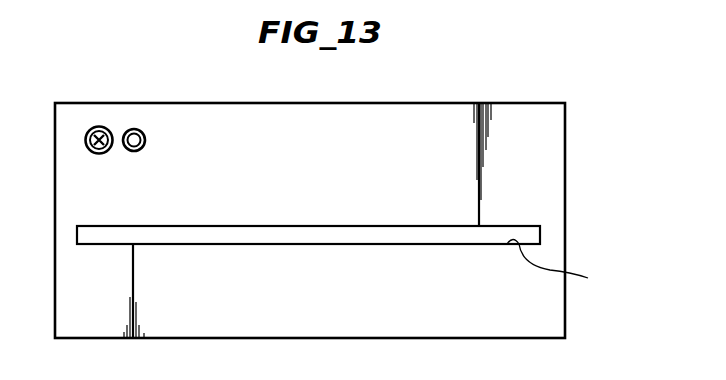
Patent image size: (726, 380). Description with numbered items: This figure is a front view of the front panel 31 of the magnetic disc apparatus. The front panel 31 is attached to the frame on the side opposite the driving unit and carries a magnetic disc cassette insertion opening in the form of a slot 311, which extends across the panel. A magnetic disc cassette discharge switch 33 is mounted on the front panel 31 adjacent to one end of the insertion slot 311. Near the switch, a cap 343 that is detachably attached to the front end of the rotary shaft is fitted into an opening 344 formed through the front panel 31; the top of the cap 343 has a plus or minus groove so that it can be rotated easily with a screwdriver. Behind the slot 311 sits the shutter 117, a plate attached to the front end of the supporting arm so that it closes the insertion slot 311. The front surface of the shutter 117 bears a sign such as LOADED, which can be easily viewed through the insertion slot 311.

The front panel 31 is at (555, 137).
The shutter 117 is at (527, 233).
The slot 311 is at (572, 267).
The cap 343 is at (95, 126).
The opening 344 is at (107, 126).
The magnetic disc cassette discharge switch 33 is at (143, 130).